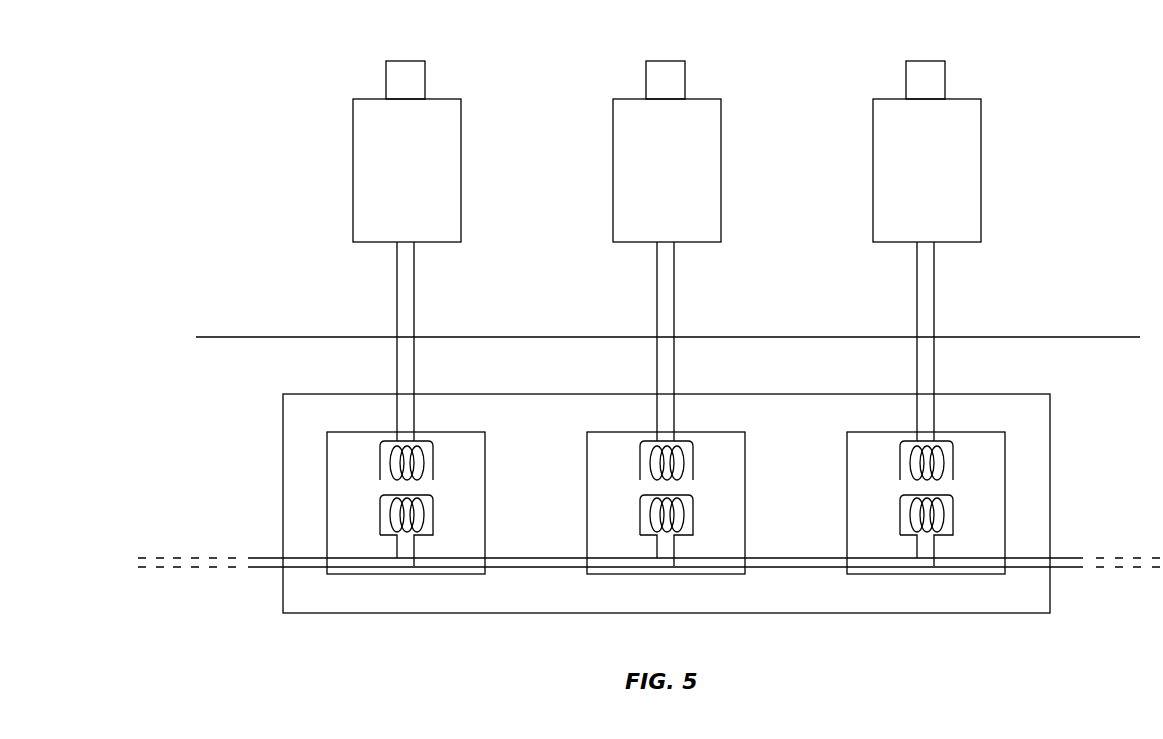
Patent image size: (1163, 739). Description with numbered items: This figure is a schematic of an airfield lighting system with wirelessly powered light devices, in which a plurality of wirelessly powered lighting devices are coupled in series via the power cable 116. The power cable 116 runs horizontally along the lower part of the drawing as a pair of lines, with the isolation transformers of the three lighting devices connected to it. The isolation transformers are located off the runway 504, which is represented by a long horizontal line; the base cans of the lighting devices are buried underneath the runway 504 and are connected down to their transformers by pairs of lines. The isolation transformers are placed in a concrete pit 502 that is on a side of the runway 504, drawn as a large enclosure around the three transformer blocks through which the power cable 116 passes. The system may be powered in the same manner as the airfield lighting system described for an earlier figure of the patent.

The runway 504 is at (247, 309).
The concrete pit 502 is at (805, 613).
The power cable 116 is at (1068, 567).